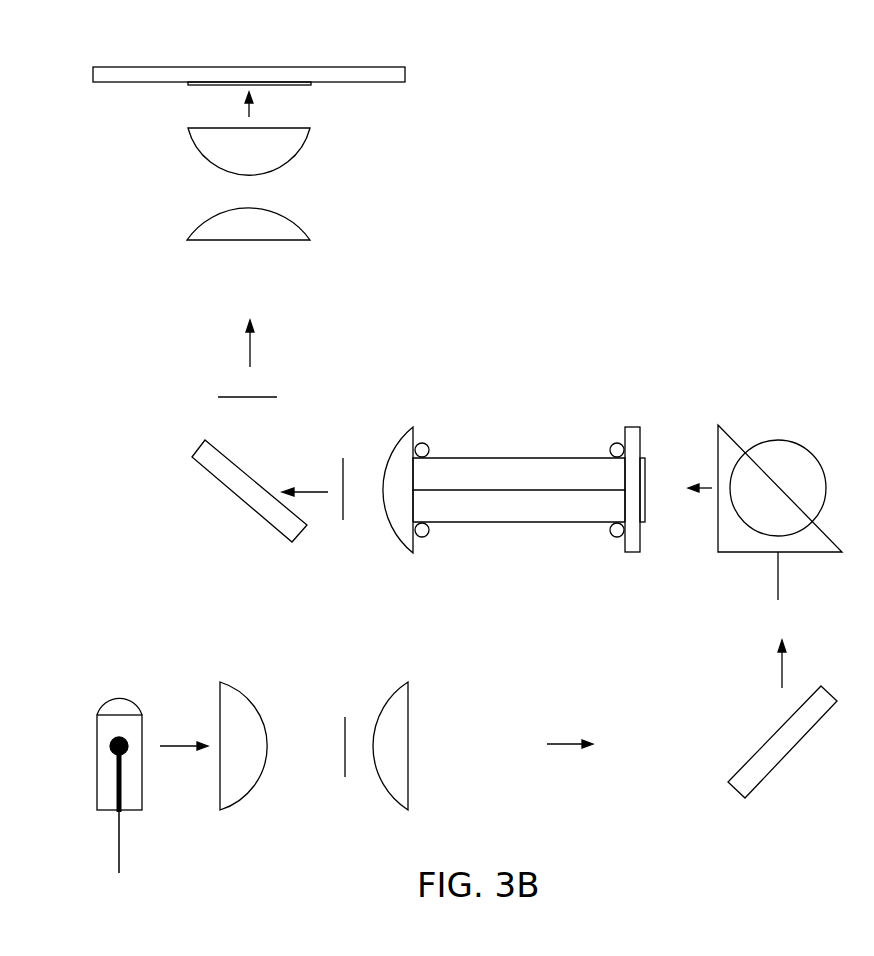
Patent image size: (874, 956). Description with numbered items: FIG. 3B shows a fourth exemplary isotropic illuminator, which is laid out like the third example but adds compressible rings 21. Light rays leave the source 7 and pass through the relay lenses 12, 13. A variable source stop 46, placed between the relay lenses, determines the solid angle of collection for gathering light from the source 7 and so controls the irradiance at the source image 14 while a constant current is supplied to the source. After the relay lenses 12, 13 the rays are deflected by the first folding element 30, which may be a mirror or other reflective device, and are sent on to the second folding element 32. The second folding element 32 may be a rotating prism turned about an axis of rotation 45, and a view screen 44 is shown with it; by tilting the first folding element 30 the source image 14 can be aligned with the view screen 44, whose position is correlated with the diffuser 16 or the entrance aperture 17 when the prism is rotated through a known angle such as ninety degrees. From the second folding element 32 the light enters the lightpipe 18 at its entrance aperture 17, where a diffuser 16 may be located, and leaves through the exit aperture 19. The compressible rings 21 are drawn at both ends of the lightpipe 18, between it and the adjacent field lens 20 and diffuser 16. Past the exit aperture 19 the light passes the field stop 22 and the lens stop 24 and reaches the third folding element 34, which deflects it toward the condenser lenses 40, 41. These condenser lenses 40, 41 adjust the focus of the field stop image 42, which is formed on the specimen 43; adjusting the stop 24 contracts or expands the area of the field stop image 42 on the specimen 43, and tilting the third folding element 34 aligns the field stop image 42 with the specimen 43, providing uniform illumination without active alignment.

The source 7 is at (122, 680).
The relay lens 12 is at (247, 692).
The relay lens 13 is at (405, 685).
The source image 14 is at (645, 470).
The diffuser 16 is at (633, 427).
The entrance aperture 17 is at (624, 518).
The lightpipe 18 is at (520, 458).
The exit aperture 19 is at (415, 500).
The field lens 20 is at (413, 433).
The compressible rings 21 is at (428, 445).
The field stop 22 is at (343, 520).
The lens stop 24 is at (277, 397).
The first folding element 30 is at (830, 690).
The second folding element 32 is at (728, 432).
The third folding element 34 is at (218, 483).
The condenser lens 40 is at (310, 238).
The condenser lens 41 is at (310, 129).
The field stop image 42 is at (193, 86).
The specimen 43 is at (405, 70).
The view screen 44 is at (810, 447).
The axis of rotation 45 is at (780, 583).
The variable source stop 46 is at (345, 717).